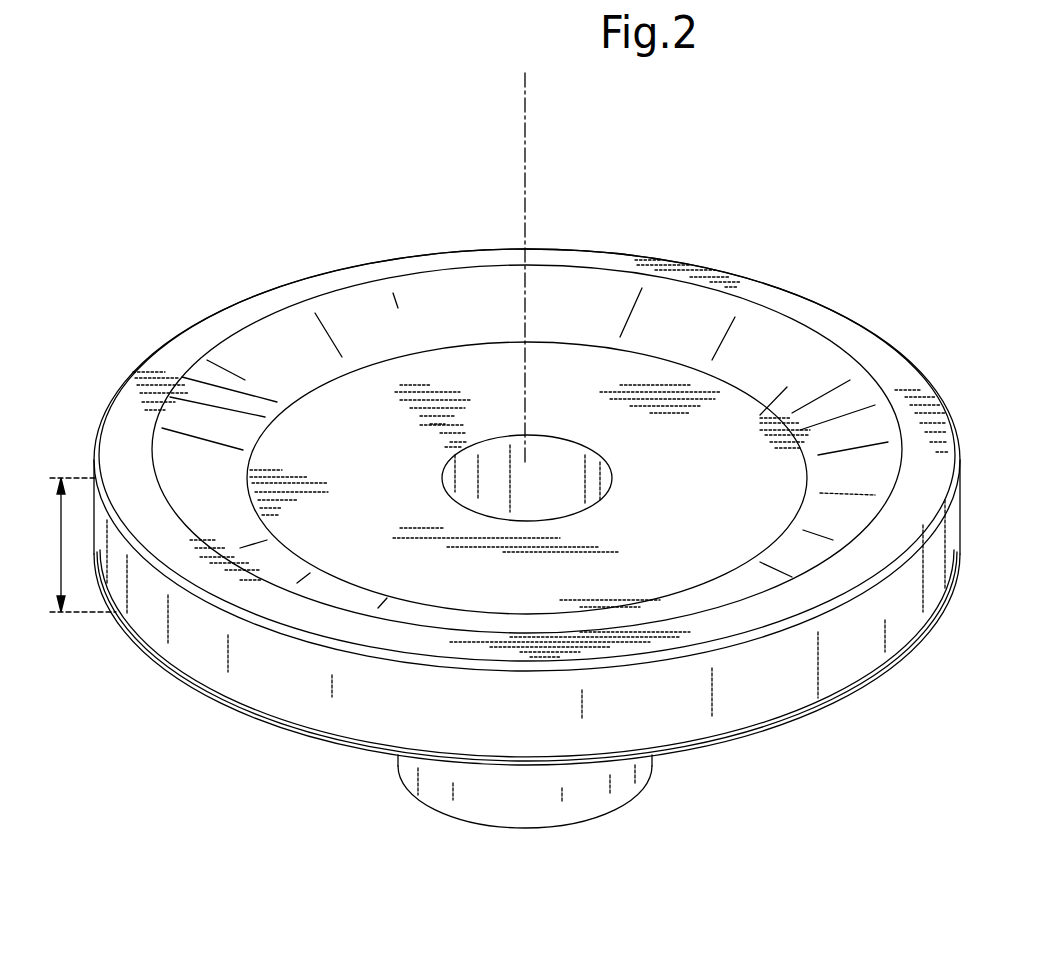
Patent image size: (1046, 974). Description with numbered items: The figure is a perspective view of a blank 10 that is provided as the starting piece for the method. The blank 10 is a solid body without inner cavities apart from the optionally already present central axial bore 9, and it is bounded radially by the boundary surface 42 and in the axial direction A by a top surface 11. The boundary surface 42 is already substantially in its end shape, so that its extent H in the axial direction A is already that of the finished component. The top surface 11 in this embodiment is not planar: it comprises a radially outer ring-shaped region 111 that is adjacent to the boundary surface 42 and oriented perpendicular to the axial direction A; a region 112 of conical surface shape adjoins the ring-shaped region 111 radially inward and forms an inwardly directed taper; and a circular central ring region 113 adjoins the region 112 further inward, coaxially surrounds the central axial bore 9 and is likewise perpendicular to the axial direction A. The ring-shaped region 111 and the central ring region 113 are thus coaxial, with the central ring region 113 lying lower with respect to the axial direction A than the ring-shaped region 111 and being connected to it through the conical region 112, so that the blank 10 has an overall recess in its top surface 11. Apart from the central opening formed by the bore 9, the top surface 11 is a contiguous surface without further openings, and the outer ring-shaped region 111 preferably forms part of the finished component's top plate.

The blank 10 is at (501, 450).
The central axial bore 9 is at (495, 470).
The top surface 11 is at (250, 360).
The ring-shaped region 111 is at (885, 370).
The region of conical surface shape 112 is at (525, 394).
The central ring region 113 is at (372, 545).
The boundary surface 42 is at (835, 652).
The axial direction A is at (525, 117).
The extent of the boundary surface in the axial direction H is at (79, 545).